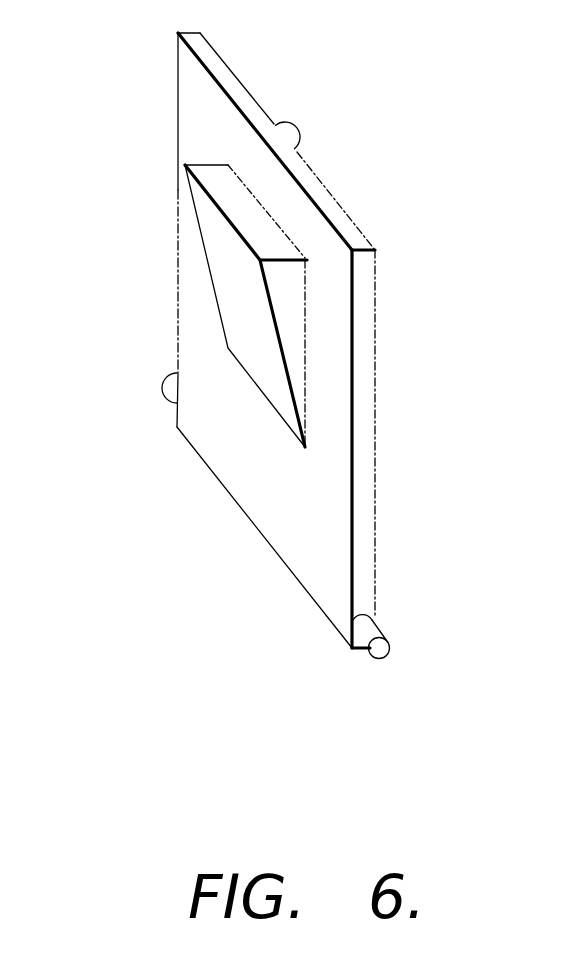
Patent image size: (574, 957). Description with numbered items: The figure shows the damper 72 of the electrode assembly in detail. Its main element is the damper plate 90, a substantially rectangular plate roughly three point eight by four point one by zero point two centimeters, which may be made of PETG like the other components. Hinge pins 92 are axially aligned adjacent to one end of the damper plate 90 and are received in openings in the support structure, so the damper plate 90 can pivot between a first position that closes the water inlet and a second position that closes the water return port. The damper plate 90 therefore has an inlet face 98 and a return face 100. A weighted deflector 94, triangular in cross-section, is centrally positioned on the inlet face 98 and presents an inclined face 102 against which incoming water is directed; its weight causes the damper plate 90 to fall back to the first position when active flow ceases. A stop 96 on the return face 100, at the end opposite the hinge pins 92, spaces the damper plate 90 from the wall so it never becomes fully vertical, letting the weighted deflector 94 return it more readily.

The damper 72 is at (147, 611).
The damper plate 90 is at (374, 322).
The hinge pins 92 is at (162, 390).
The weighted deflector 94 is at (197, 218).
The stop 96 is at (296, 130).
The inlet face 98 is at (316, 528).
The return face 100 is at (375, 435).
The inclined face 102 is at (238, 295).